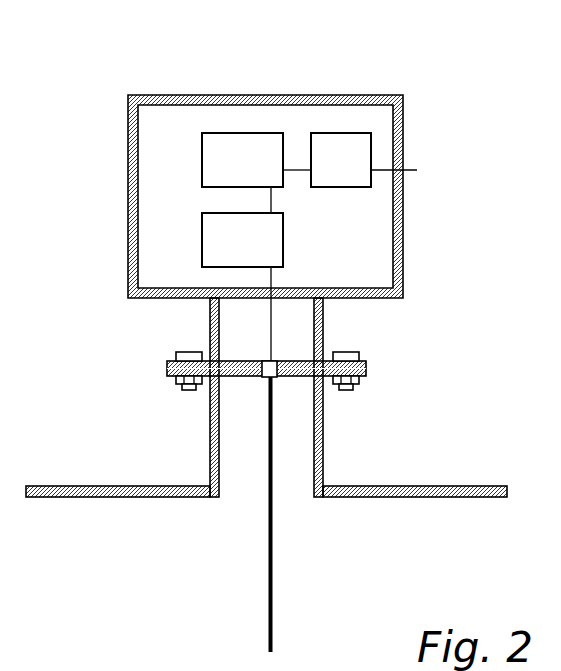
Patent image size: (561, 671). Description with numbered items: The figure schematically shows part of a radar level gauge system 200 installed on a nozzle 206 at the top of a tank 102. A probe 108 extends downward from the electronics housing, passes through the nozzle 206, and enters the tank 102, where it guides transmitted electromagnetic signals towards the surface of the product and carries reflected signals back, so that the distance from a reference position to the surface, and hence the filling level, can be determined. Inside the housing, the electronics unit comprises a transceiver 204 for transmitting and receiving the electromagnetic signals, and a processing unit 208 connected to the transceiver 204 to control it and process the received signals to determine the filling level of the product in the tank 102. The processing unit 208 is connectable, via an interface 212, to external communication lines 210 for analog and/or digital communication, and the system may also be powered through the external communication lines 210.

The radar level gauge system 200 is at (187, 95).
The interface 212 is at (343, 133).
The processing unit 208 is at (202, 163).
The external communication lines 210 is at (413, 173).
The transceiver 204 is at (283, 238).
The nozzle 206 is at (210, 422).
The tank 102 is at (436, 486).
The probe 108 is at (272, 605).